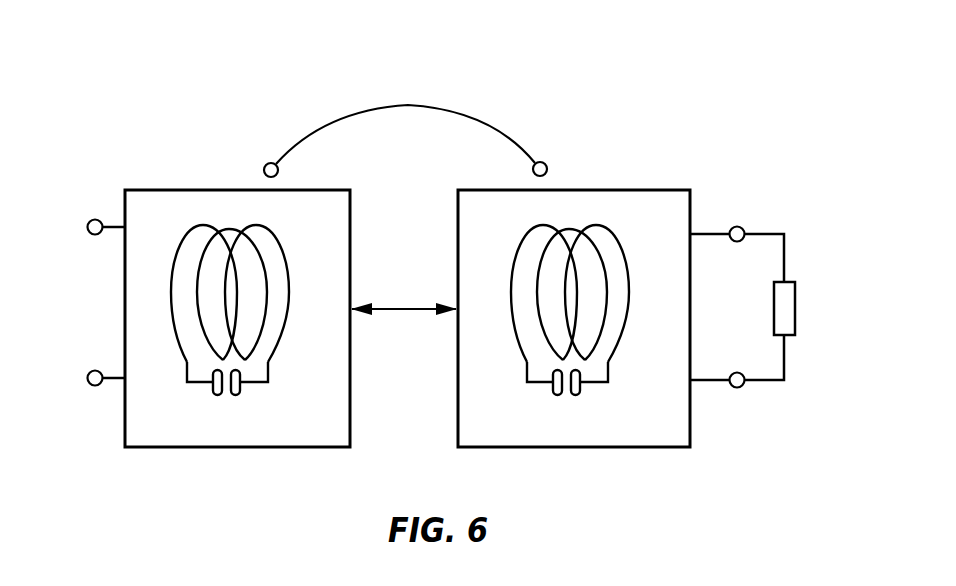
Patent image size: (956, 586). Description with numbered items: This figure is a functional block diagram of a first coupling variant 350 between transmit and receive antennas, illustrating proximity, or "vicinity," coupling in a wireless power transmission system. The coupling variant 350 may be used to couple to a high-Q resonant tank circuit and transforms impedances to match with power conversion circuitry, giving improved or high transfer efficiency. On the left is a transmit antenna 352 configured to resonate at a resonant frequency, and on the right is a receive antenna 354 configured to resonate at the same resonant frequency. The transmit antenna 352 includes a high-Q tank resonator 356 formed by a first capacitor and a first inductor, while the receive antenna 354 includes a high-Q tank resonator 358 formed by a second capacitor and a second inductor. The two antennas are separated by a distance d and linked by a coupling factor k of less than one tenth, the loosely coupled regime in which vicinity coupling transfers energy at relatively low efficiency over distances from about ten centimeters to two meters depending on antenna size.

The coupling variant 350 is at (449, 60).
The transmit antenna 352 is at (237, 300).
The receive antenna 354 is at (574, 299).
The high-Q tank resonator 356 is at (283, 349).
The high-Q tank resonator 358 is at (621, 349).